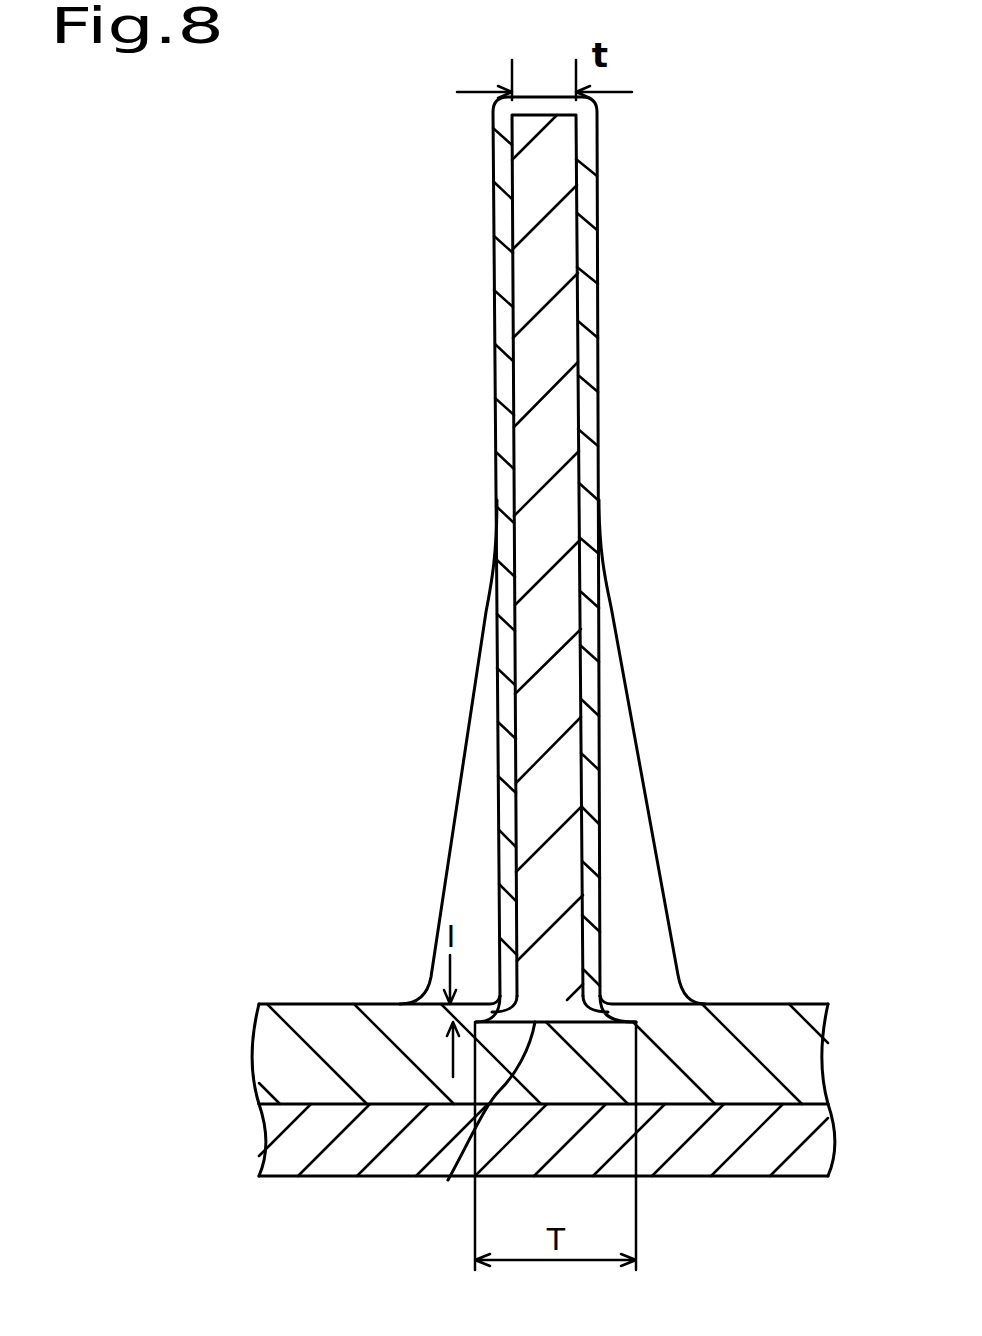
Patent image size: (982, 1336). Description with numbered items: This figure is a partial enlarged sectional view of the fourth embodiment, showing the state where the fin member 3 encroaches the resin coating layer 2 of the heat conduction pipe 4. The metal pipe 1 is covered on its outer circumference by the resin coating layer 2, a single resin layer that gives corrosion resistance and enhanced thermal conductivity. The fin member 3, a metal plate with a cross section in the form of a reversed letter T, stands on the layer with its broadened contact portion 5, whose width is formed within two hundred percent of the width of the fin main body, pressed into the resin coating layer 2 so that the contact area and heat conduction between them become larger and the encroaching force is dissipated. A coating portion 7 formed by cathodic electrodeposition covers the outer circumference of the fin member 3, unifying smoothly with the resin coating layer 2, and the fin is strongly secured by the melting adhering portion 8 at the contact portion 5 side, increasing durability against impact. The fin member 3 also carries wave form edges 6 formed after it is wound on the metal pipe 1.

The metal pipe 1 is at (748, 1163).
The resin coating layer 2 is at (757, 1009).
The fin member 3 is at (578, 160).
The heat conduction pipe 4 is at (738, 607).
The contact portion 5 is at (448, 1180).
The wave form edges 6 is at (470, 872).
The coating portion 7 is at (587, 527).
The melting adhering portion 8 is at (612, 992).